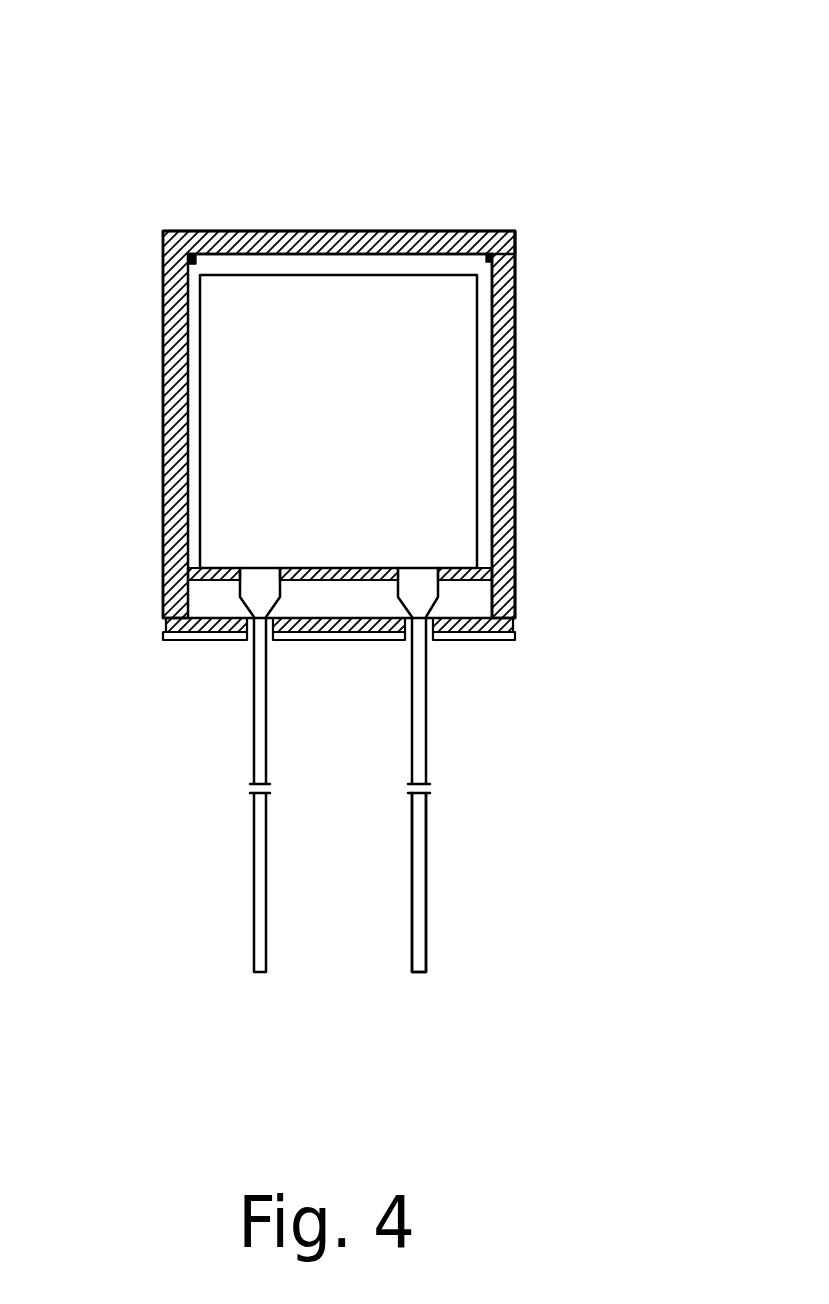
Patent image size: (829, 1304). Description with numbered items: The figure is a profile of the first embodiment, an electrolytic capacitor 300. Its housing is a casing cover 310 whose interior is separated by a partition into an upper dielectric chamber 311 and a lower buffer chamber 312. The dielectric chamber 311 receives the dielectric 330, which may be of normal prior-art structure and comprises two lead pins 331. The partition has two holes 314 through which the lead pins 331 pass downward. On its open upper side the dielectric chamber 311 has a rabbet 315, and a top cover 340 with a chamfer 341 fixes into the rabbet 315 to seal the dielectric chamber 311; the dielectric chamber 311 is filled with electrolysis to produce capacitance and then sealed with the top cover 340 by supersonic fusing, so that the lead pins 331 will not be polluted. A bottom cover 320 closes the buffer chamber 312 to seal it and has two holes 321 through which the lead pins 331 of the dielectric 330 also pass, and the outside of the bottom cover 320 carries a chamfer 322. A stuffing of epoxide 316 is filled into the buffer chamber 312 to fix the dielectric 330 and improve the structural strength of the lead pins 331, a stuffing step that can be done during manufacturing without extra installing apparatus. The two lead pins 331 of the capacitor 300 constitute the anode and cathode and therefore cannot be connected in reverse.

The electrolytic capacitor 300 is at (527, 258).
The casing cover 310 is at (515, 448).
The dielectric chamber 311 is at (515, 387).
The buffer chamber 312 is at (492, 578).
The holes 314 is at (238, 583).
The rabbet 315 is at (165, 240).
The epoxide 316 is at (483, 608).
The bottom cover 320 is at (342, 640).
The holes 321 is at (433, 640).
The chamfer 322 is at (500, 640).
The dielectric 330 is at (345, 295).
The lead pins 331 is at (427, 885).
The top cover 340 is at (305, 231).
The chamfer 341 is at (492, 258).